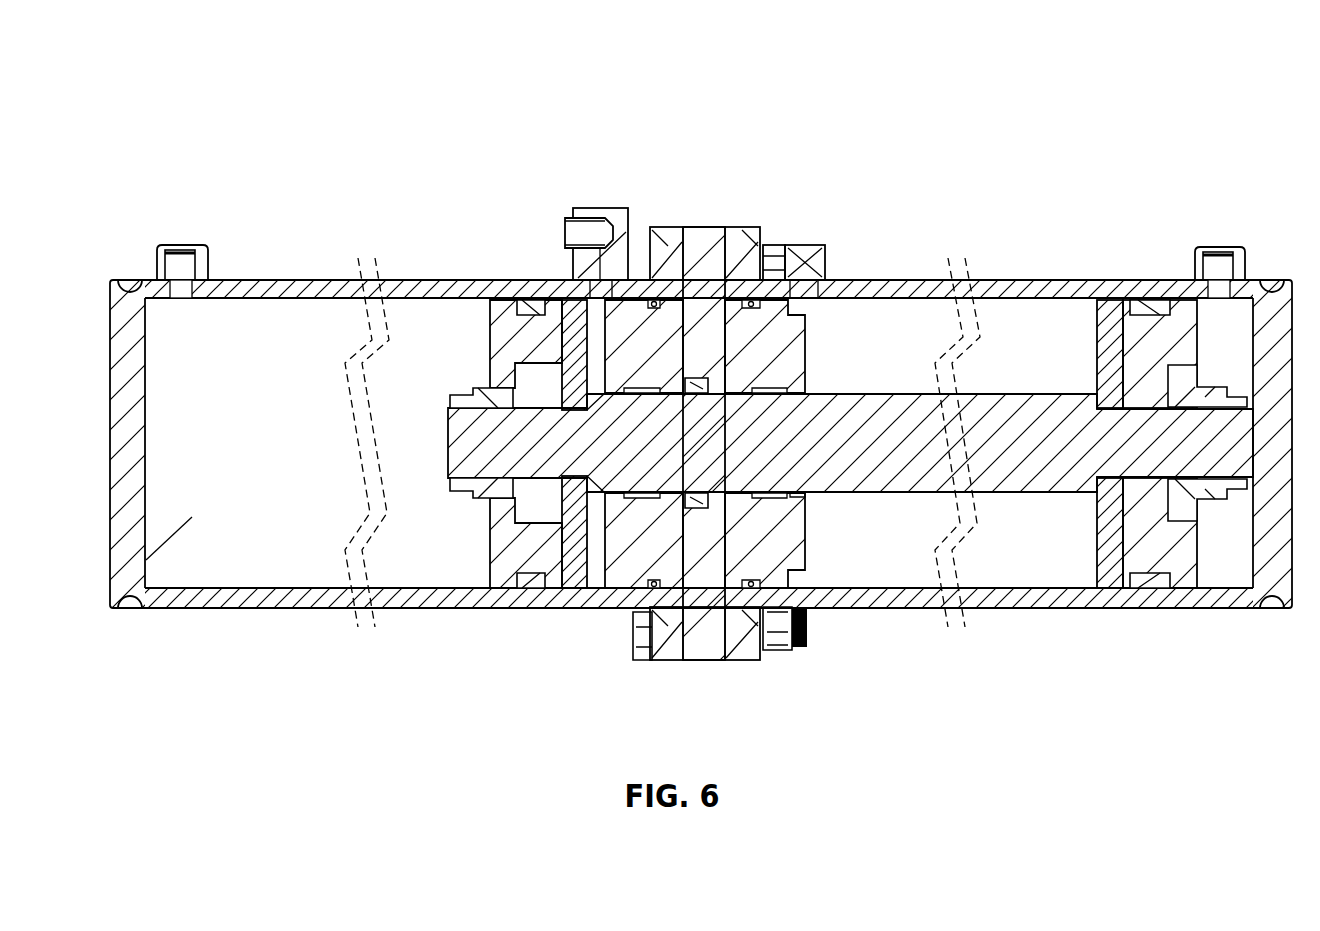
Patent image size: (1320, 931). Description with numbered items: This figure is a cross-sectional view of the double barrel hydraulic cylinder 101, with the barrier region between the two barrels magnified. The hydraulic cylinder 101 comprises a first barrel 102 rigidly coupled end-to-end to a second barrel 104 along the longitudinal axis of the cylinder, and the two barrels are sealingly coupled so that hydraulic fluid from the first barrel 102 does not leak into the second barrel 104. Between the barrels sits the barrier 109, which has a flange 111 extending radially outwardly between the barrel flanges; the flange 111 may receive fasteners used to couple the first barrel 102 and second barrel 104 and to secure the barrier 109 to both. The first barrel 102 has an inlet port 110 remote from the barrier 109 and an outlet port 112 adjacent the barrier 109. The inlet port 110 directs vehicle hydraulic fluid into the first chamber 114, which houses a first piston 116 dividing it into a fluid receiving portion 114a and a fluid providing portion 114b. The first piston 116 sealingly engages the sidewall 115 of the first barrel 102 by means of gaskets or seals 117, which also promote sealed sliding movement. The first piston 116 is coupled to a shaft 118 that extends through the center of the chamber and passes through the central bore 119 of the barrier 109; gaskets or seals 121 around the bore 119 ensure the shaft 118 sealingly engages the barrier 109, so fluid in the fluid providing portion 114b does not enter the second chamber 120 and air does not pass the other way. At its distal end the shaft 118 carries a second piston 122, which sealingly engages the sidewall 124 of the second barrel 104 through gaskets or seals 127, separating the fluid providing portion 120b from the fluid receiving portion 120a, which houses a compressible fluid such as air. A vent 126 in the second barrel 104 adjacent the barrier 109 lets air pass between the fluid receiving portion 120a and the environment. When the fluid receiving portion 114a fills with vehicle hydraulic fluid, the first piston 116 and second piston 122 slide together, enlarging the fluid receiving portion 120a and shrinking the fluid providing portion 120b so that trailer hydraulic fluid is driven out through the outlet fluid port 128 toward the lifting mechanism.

The hydraulic cylinder 101 is at (1254, 106).
The first barrel 102 is at (1047, 203).
The second barrel 104 is at (259, 199).
The barrier 109 is at (703, 340).
The inlet port 110 is at (1220, 268).
The flange 111 is at (707, 642).
The outlet port 112 is at (800, 260).
The first chamber 114 is at (843, 348).
The fluid receiving portion 114a is at (1222, 575).
The fluid providing portion 114b is at (905, 336).
The sidewall 115 is at (902, 608).
The first piston 116 is at (1135, 342).
The gaskets or seals 117 is at (1148, 308).
The shaft 118 is at (1033, 450).
The central bore 119 is at (795, 500).
The second chamber 120 is at (315, 336).
The fluid receiving portion 120a is at (598, 576).
The fluid providing portion 120b is at (410, 336).
The gaskets or seals 121 is at (762, 500).
The second piston 122 is at (513, 357).
The sidewall 124 is at (240, 608).
The vent 126 is at (597, 212).
The gaskets or seals 127 is at (535, 306).
The outlet fluid port 128 is at (183, 262).